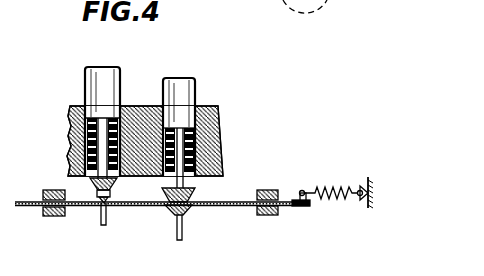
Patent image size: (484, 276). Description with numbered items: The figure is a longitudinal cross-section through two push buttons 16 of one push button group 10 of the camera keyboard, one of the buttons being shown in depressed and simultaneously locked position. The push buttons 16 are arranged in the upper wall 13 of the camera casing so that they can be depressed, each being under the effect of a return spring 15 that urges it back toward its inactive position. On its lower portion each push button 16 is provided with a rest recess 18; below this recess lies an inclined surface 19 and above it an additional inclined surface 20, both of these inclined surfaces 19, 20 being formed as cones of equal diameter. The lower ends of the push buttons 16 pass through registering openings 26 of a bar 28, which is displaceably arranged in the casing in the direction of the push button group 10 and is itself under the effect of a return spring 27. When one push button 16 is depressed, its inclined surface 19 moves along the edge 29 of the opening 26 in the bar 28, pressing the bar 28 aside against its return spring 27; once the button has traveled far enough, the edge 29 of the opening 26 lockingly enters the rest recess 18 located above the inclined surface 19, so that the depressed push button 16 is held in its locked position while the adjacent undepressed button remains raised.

The push button group 10 is at (190, 213).
The upper wall 13 is at (219, 110).
The return spring 15 is at (84, 143).
The push button 16 is at (161, 88).
The rest recess 18 is at (112, 191).
The inclined surface 19 is at (78, 207).
The additional inclined surface 20 is at (88, 182).
The opening 26 is at (118, 207).
The return spring 27 is at (330, 186).
The bar 28 is at (305, 206).
The edge 29 is at (98, 206).